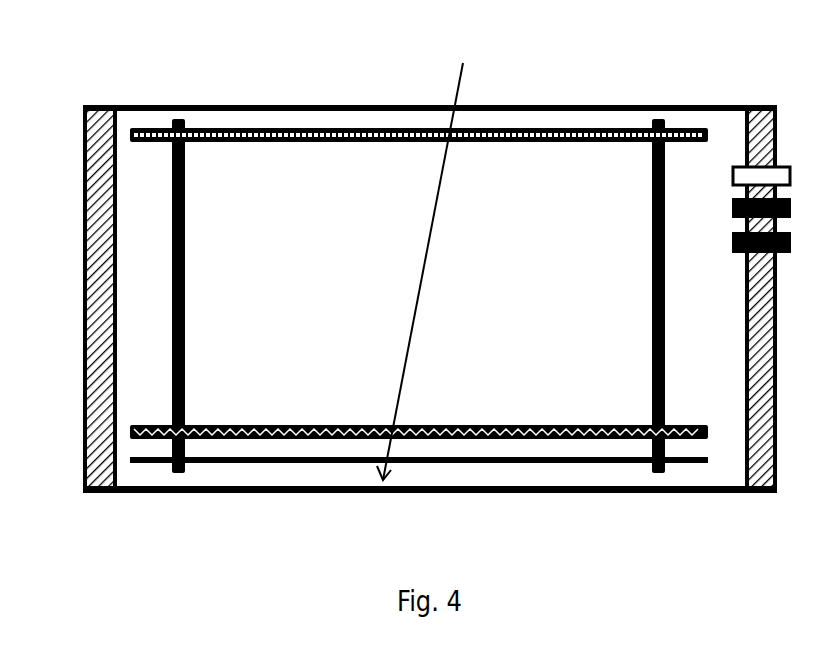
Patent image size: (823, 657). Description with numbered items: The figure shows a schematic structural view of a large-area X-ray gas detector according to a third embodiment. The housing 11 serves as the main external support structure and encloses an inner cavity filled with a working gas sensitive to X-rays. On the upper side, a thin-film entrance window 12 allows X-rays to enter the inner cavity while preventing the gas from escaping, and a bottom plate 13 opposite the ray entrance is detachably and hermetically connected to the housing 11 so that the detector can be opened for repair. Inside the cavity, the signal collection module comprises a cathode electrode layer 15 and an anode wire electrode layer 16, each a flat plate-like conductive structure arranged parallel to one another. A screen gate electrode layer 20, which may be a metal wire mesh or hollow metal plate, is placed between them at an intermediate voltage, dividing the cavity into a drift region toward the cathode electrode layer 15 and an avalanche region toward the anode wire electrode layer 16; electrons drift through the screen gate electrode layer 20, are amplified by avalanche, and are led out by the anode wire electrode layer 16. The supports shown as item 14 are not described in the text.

The housing 11 is at (83, 185).
The entrance window 12 is at (126, 104).
The bottom plate 13 is at (123, 492).
The support rods 14 is at (178, 118).
The cathode electrode layer 15 is at (281, 127).
The anode wire electrode layer 16 is at (130, 459).
The screen gate electrode layer 20 is at (130, 430).